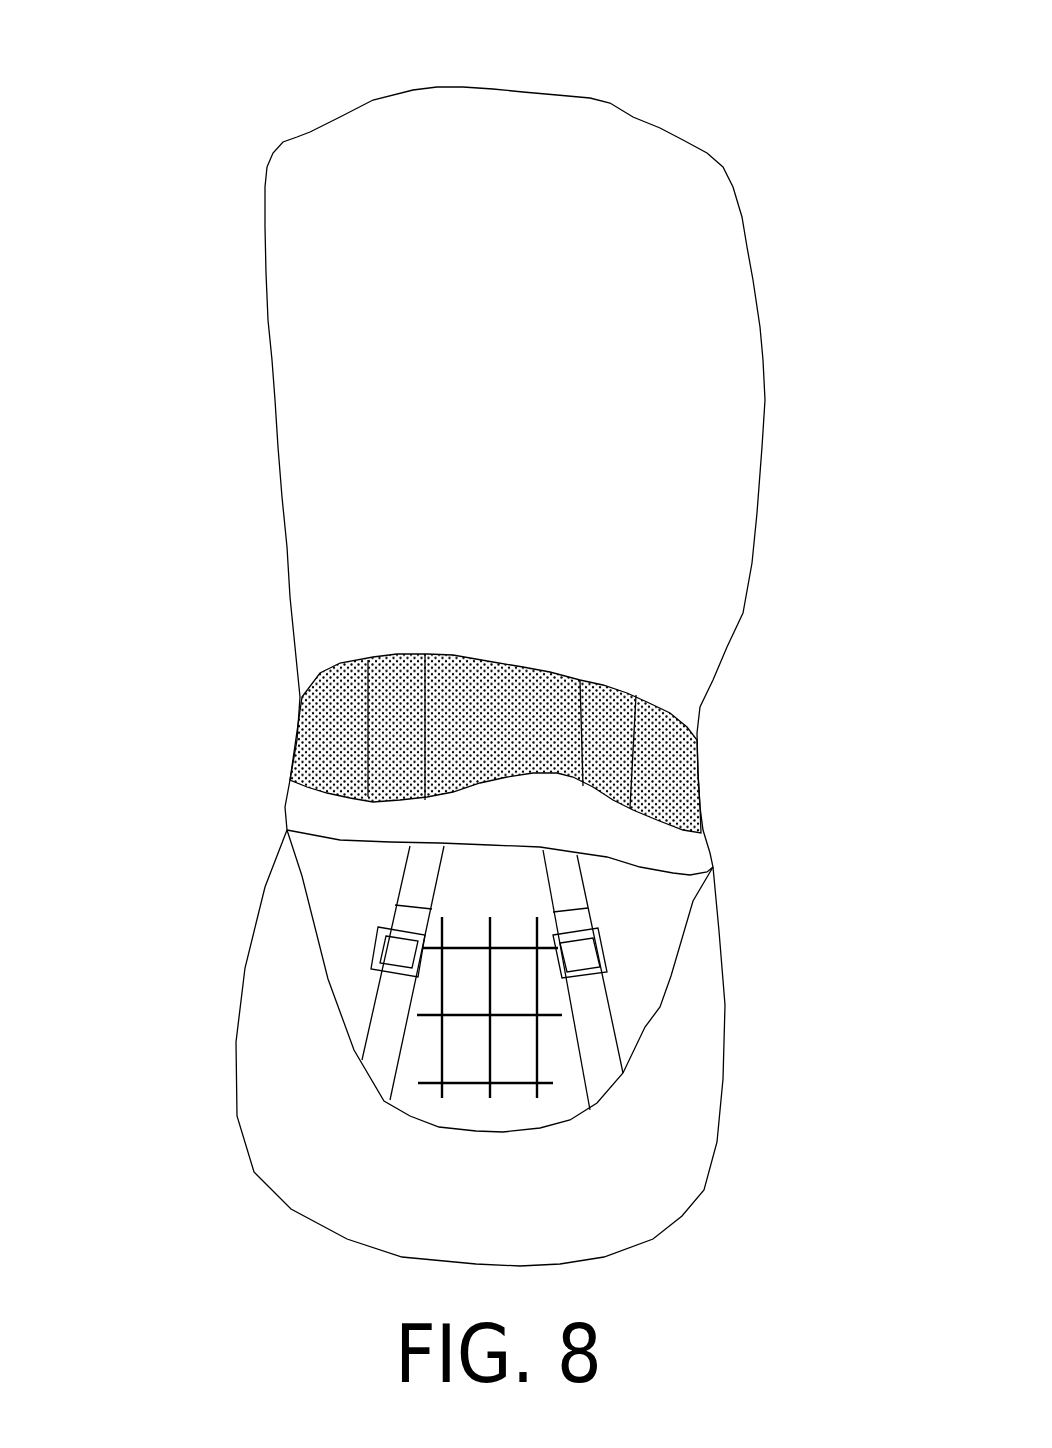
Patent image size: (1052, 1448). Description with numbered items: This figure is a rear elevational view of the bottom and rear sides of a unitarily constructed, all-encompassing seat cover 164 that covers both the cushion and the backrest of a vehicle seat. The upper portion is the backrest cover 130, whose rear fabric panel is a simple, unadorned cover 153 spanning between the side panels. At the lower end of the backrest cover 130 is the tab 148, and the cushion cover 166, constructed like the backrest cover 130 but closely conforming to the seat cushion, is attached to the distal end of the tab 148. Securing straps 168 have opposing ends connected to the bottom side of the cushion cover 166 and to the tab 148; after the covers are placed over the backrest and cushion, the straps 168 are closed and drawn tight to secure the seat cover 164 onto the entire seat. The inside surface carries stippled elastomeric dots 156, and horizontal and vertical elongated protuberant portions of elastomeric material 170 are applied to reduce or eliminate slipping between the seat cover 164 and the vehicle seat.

The backrest cover 130 is at (470, 655).
The seat cover 164 is at (470, 535).
The cover 153 is at (594, 410).
The elastomeric dots 156 is at (418, 818).
The tab 148 is at (551, 825).
The cushion cover 166 is at (424, 1019).
The securing straps 168 is at (466, 978).
The elastomeric material 170 is at (369, 1111).